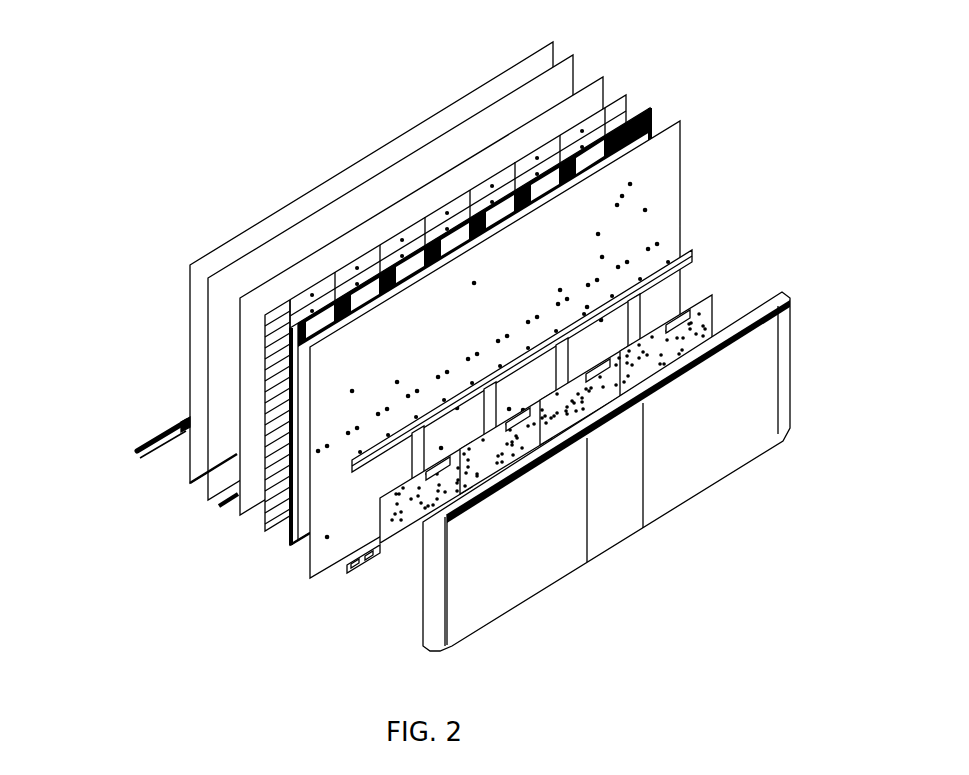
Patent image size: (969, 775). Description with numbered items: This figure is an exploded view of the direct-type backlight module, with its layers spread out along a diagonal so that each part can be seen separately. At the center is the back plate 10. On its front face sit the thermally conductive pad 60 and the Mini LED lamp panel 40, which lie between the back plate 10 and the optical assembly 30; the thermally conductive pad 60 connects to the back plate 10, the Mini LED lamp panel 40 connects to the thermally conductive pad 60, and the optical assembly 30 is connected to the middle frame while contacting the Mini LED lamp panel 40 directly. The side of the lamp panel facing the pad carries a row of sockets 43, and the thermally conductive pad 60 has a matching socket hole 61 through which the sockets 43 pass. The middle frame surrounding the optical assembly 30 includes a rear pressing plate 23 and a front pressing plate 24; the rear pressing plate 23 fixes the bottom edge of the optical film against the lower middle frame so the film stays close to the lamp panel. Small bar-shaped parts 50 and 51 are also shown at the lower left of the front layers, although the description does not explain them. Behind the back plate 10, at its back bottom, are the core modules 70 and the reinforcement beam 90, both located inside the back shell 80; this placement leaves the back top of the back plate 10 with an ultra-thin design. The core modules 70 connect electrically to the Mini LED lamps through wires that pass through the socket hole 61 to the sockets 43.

The back plate 10 is at (311, 571).
The rear pressing plate 23 is at (220, 503).
The front pressing plate 24 is at (183, 425).
The optical assembly 30 is at (265, 503).
The Mini LED lamp panel 40 is at (392, 312).
The sockets 43 is at (603, 115).
The light bar 50 is at (163, 433).
The light strip 51 is at (203, 447).
The thermally conductive pad 60 is at (422, 340).
The socket hole 61 is at (637, 122).
The core modules 70 is at (392, 548).
The back shell 80 is at (430, 632).
The reinforcement beam 90 is at (350, 568).